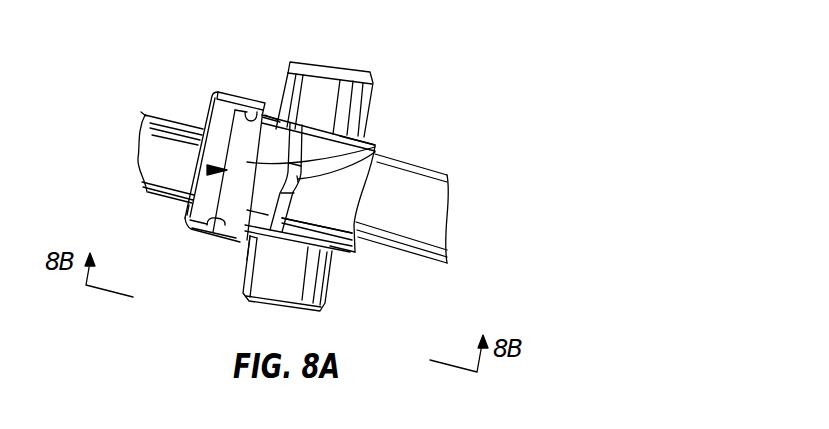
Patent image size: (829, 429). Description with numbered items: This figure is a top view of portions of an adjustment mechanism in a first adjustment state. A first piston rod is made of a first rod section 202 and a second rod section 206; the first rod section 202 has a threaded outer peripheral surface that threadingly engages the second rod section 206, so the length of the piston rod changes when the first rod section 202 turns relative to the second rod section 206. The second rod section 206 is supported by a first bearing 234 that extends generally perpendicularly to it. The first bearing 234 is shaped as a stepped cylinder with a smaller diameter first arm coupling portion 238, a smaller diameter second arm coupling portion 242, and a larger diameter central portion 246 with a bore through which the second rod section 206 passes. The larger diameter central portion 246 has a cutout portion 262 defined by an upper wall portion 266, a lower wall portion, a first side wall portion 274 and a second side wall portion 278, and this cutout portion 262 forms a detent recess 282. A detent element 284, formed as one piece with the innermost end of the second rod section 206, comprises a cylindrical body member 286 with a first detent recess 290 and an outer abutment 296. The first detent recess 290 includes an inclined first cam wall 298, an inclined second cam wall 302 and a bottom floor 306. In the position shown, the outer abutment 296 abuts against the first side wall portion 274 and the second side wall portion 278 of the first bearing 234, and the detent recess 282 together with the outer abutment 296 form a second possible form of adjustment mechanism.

The first rod section 202 is at (160, 138).
The second rod section 206 is at (423, 205).
The first bearing 234 is at (345, 64).
The first arm coupling portion 238 is at (303, 288).
The second arm coupling portion 242 is at (282, 124).
The larger diameter central portion 246 is at (375, 144).
The cutout portion 262 is at (235, 249).
The upper wall portion 266 is at (380, 158).
The first side wall portion 274 is at (284, 118).
The second side wall portion 278 is at (247, 270).
The detent recess 282 is at (265, 180).
The detent element 284 is at (214, 91).
The cylindrical body member 286 is at (186, 222).
The first detent recess 290 is at (210, 168).
The outer abutment 296 is at (376, 150).
The first cam wall 298 is at (260, 102).
The second cam wall 302 is at (205, 226).
The bottom floor 306 is at (225, 196).